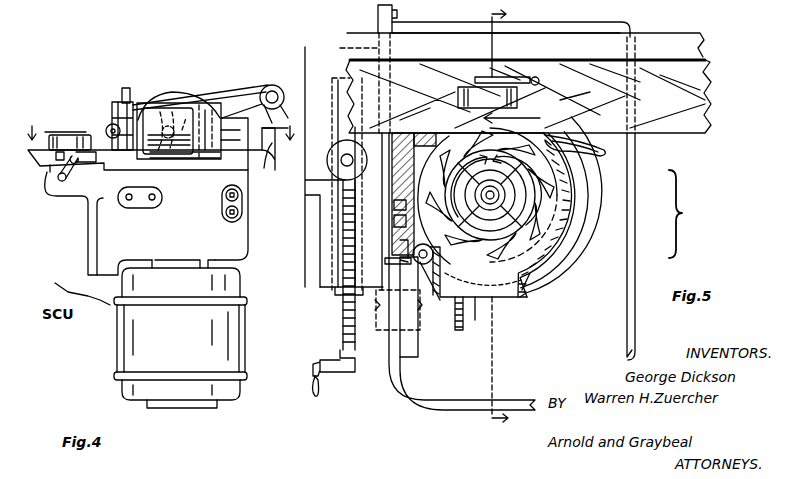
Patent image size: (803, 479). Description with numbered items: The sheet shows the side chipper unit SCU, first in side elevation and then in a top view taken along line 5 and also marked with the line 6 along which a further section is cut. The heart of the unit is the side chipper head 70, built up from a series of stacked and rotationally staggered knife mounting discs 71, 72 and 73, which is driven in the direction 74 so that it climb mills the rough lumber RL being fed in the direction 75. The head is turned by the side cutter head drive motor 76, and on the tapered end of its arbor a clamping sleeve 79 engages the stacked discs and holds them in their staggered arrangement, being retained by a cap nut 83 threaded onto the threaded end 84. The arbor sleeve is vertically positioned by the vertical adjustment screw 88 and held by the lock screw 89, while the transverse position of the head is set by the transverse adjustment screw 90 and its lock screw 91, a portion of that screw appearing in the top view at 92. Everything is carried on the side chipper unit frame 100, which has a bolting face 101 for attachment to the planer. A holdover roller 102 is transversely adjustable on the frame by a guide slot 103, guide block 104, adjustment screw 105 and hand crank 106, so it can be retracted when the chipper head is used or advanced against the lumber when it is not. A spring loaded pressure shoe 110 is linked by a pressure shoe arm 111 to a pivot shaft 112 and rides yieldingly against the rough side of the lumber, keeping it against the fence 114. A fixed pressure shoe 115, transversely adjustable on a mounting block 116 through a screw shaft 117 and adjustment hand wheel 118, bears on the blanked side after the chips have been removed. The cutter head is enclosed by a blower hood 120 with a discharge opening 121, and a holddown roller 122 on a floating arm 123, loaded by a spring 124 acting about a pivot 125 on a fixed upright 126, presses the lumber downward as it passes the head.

In FIG. 4, the section line 5— 5 is at (164, 125).
In FIG. 5, the section line 6— 6 is at (492, 218).
In FIG. 4, the side chipper head 70 is at (178, 112).
In FIG. 5, the side chipper head 70 is at (440, 244).
In FIG. 5, the knife mounting disc 71 is at (560, 236).
In FIG. 5, the knife mounting disc 72 is at (560, 281).
In FIG. 5, the knife mounting disc 73 is at (525, 273).
In FIG. 5, the direction of chipper head rotation 74 is at (515, 185).
In FIG. 5, the direction of lumber feed 75 is at (551, 111).
In FIG. 4, the side cutter head drive motor 76 is at (140, 348).
In FIG. 5, the clamping sleeve 79 is at (476, 212).
In FIG. 5, the cap nut 83 is at (498, 206).
In FIG. 5, the threaded end 84 is at (478, 180).
In FIG. 4, the vertical adjustment screw 88 is at (225, 198).
In FIG. 4, the lock screw 89 is at (226, 214).
In FIG. 4, the transverse adjustment screw 90 is at (151, 200).
In FIG. 4, the lock screw 91 is at (127, 200).
In FIG. 5, the portion of transverse adjustment screw 92 is at (463, 320).
In FIG. 4, the side chipper unit frame 100 is at (238, 257).
In FIG. 5, the side chipper unit frame 100 is at (627, 342).
In FIG. 4, the bolting face 101 is at (88, 238).
In FIG. 4, the holdover roller 102 is at (67, 132).
In FIG. 5, the holdover roller 102 is at (333, 150).
In FIG. 4, the guide slot 103 is at (85, 162).
In FIG. 5, the guide slot 103 is at (385, 312).
In FIG. 4, the guide block 104 is at (49, 178).
In FIG. 5, the guide block 104 is at (333, 190).
In FIG. 5, the adjustment screw 105 is at (343, 312).
In FIG. 5, the hand crank 106 is at (323, 390).
In FIG. 4, the spring loaded pressure shoe 110 is at (236, 148).
In FIG. 5, the spring loaded pressure shoe 110 is at (598, 153).
In FIG. 4, the pressure shoe arm 111 is at (196, 168).
In FIG. 5, the pressure shoe arm 111 is at (576, 227).
In FIG. 4, the pivot shaft 112 is at (125, 86).
In FIG. 5, the pivot shaft 112 is at (428, 288).
In FIG. 5, the fence 114 is at (655, 40).
In FIG. 5, the fixed pressure shoe 115 is at (410, 133).
In FIG. 5, the mounting block 116 is at (394, 205).
In FIG. 5, the screw shaft 117 is at (394, 222).
In FIG. 4, the adjustment hand wheel 118 is at (107, 128).
In FIG. 5, the adjustment hand wheel 118 is at (388, 258).
In FIG. 4, the blower hood 120 is at (176, 93).
In FIG. 5, the blower hood 120 is at (578, 185).
In FIG. 4, the discharge opening 121 is at (170, 156).
In FIG. 5, the discharge opening 121 is at (512, 297).
In FIG. 4, the holddown roller 122 is at (155, 108).
In FIG. 5, the holddown roller 122 is at (458, 92).
In FIG. 4, the floating arm 123 is at (227, 108).
In FIG. 5, the floating arm 123 is at (541, 82).
In FIG. 4, the spring 124 is at (245, 96).
In FIG. 4, the pivot 125 is at (272, 84).
In FIG. 4, the fixed upright 126 is at (268, 170).
In FIG. 5, the rough lumber RL is at (698, 118).
In FIG. 5, the side chipper unit SCU is at (692, 214).